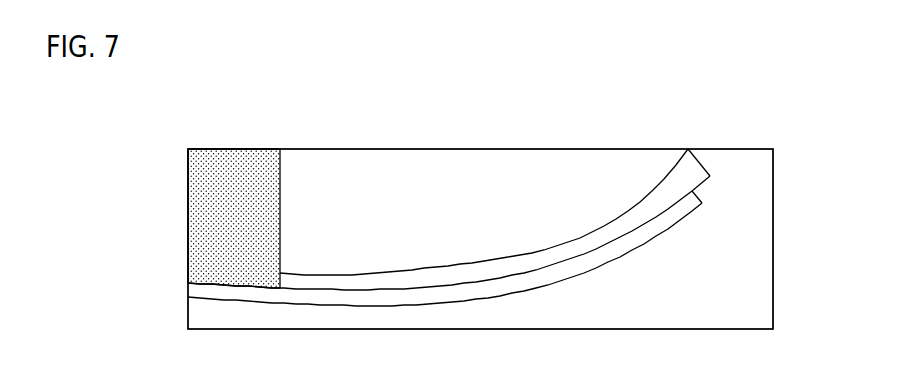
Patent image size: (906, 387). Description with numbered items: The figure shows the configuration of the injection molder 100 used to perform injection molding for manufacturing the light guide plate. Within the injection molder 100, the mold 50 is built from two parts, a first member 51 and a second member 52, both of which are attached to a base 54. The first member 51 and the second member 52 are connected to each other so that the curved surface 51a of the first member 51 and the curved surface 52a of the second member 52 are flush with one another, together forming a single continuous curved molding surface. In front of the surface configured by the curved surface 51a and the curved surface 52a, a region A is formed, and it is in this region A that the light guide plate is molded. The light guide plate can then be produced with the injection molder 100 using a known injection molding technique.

The injection molder 100 is at (712, 102).
The base 54 is at (541, 168).
The mold 50 is at (449, 183).
The first member 51 is at (495, 201).
The second member 52 is at (234, 168).
The curved surface 52a is at (233, 287).
The curved surface 51a is at (467, 283).
The region A is at (587, 262).